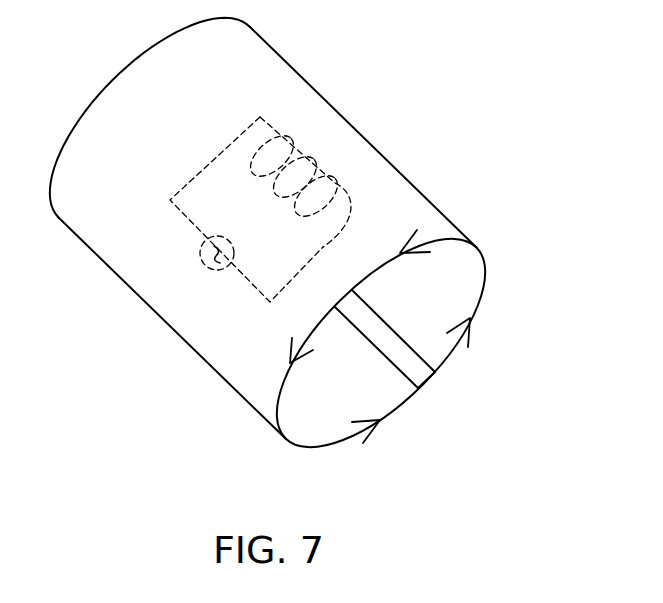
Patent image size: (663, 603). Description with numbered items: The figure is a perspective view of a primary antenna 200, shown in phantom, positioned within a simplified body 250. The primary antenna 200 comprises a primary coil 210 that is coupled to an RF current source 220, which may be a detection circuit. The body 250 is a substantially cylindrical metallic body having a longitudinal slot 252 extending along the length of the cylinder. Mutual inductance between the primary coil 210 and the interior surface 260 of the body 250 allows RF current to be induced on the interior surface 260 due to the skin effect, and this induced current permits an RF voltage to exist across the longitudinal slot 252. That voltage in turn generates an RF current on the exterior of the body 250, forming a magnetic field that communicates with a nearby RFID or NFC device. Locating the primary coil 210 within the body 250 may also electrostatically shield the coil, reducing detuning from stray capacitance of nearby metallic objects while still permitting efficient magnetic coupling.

The primary antenna 200 is at (201, 148).
The primary coil 210 is at (337, 182).
The RF current source 220 is at (207, 266).
The body 250 is at (353, 123).
The longitudinal slot 252 is at (427, 393).
The interior surface 260 is at (472, 280).